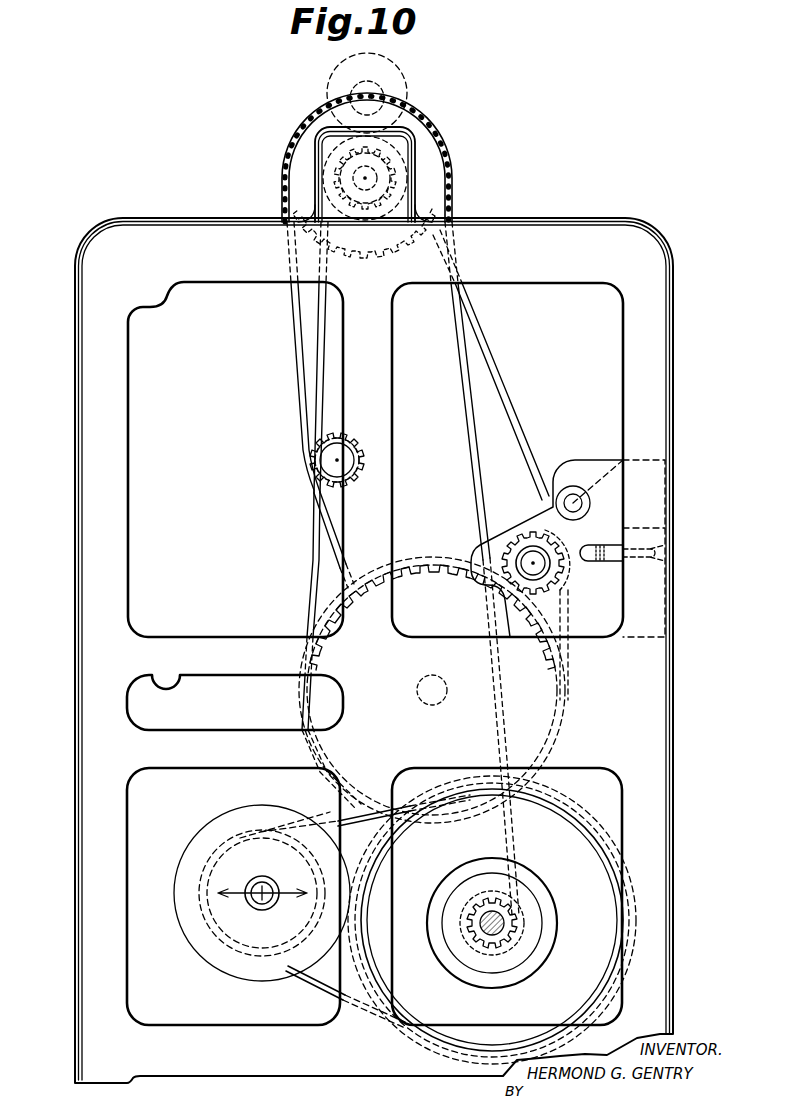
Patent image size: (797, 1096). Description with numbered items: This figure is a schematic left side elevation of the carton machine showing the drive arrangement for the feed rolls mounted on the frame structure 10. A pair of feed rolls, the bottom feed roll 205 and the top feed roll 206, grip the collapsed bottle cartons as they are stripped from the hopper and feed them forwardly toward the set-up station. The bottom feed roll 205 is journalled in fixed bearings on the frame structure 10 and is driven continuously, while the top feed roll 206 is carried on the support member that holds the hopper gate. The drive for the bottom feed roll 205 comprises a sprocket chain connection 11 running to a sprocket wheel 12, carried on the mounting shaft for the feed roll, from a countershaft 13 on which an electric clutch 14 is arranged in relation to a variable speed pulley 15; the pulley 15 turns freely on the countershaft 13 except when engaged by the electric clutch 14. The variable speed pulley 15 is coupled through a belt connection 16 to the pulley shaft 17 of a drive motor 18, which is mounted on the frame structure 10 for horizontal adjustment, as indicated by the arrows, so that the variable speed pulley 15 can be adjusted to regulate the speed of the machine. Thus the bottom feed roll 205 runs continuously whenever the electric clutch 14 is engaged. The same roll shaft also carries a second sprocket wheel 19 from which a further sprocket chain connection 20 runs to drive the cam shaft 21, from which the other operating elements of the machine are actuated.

The frame structure 10 is at (66, 490).
The sprocket chain connection 11 is at (297, 331).
The sprocket wheel 12 is at (300, 178).
The countershaft 13 is at (507, 927).
The electric clutch 14 is at (548, 886).
The variable speed pulley 15 is at (564, 826).
The belt connection 16 is at (332, 818).
The pulley shaft 17 is at (262, 900).
The drive motor 18 is at (215, 828).
The second sprocket wheel 19 is at (364, 202).
The sprocket chain connection 20 is at (505, 402).
The cam shaft 21 is at (440, 682).
The bottom feed roll 205 is at (328, 160).
The top feed roll 206 is at (336, 78).